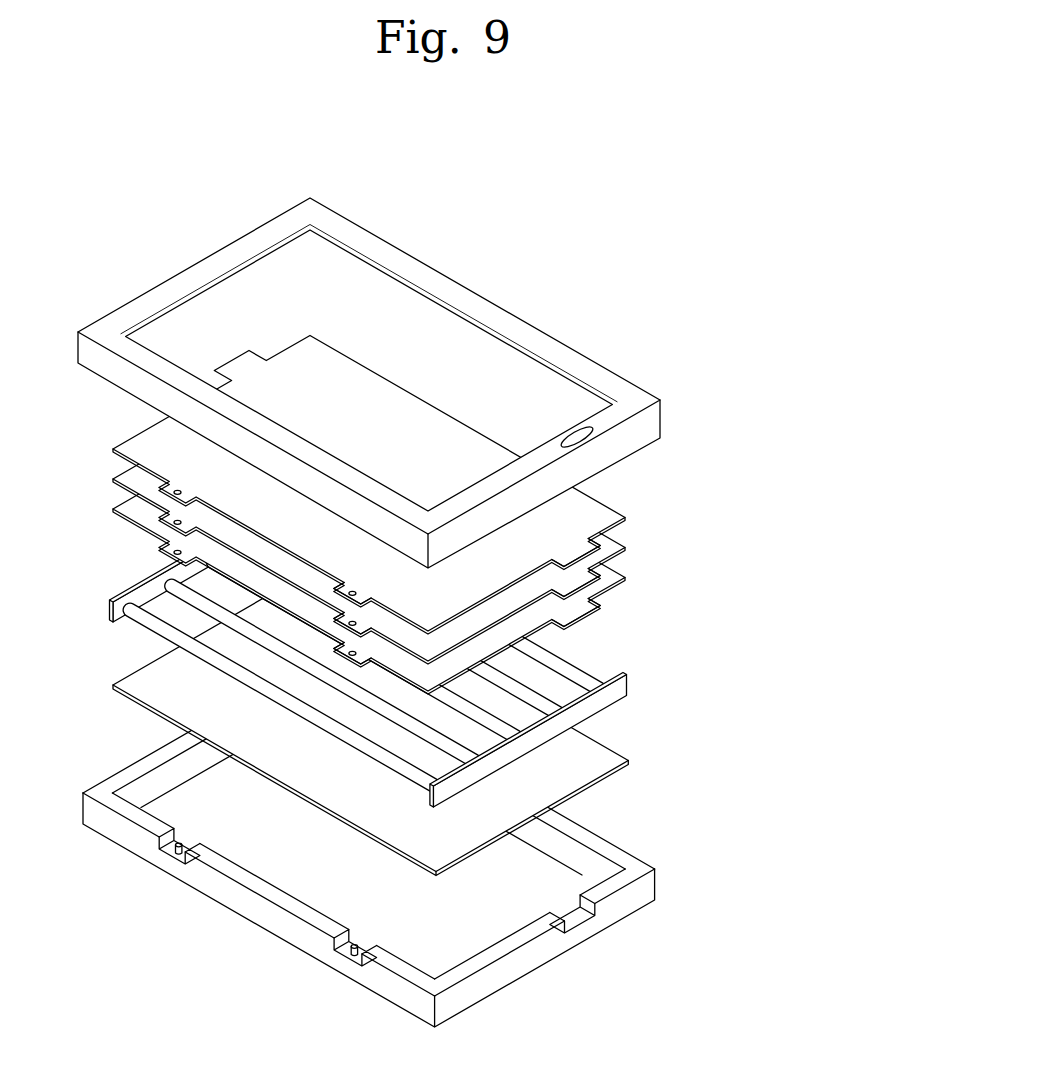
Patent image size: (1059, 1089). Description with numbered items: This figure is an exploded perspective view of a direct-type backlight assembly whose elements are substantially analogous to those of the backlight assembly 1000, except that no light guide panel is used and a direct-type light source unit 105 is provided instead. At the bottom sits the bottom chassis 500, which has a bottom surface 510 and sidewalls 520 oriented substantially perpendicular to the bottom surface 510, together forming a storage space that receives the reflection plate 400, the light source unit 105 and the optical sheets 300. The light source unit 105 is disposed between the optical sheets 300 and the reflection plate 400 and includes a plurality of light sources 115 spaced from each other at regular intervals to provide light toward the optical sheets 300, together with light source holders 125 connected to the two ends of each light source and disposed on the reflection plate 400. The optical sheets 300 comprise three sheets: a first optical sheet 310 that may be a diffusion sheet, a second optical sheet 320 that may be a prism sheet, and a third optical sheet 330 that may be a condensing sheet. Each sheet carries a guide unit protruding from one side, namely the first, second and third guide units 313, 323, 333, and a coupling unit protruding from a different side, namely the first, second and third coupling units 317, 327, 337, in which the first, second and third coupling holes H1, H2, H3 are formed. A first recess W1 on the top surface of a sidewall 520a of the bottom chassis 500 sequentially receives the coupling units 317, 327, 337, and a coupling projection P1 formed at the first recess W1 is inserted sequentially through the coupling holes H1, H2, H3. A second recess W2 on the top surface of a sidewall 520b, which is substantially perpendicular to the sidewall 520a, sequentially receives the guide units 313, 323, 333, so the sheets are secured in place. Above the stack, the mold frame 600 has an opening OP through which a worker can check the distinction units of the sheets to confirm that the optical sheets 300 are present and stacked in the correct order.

The backlight assembly 1000 is at (435, 592).
The mold frame 600 is at (369, 383).
The opening OP is at (567, 434).
The optical sheets 300 is at (438, 535).
The first optical sheet 310 is at (414, 514).
The second optical sheet 320 is at (414, 540).
The third optical sheet 330 is at (414, 565).
The first guide unit 313 is at (584, 556).
The second guide unit 323 is at (584, 586).
The third guide unit 333 is at (584, 616).
The first coupling unit 317 is at (341, 591).
The second coupling unit 327 is at (365, 621).
The third coupling unit 337 is at (373, 650).
The first coupling hole H1 is at (352, 590).
The second coupling hole H2 is at (357, 621).
The third coupling hole H3 is at (358, 651).
The light source unit 105 is at (433, 648).
The light source holders 125 is at (612, 690).
The light sources 115 is at (408, 648).
The reflection plate 400 is at (605, 768).
The bottom chassis 500 is at (438, 846).
The bottom surface 510 is at (560, 866).
The sidewalls 520 is at (414, 846).
The sidewall 520a is at (259, 894).
The sidewall 520b is at (545, 923).
The coupling projection P1 is at (346, 947).
The first recess W1 is at (366, 935).
The second recess W2 is at (559, 904).